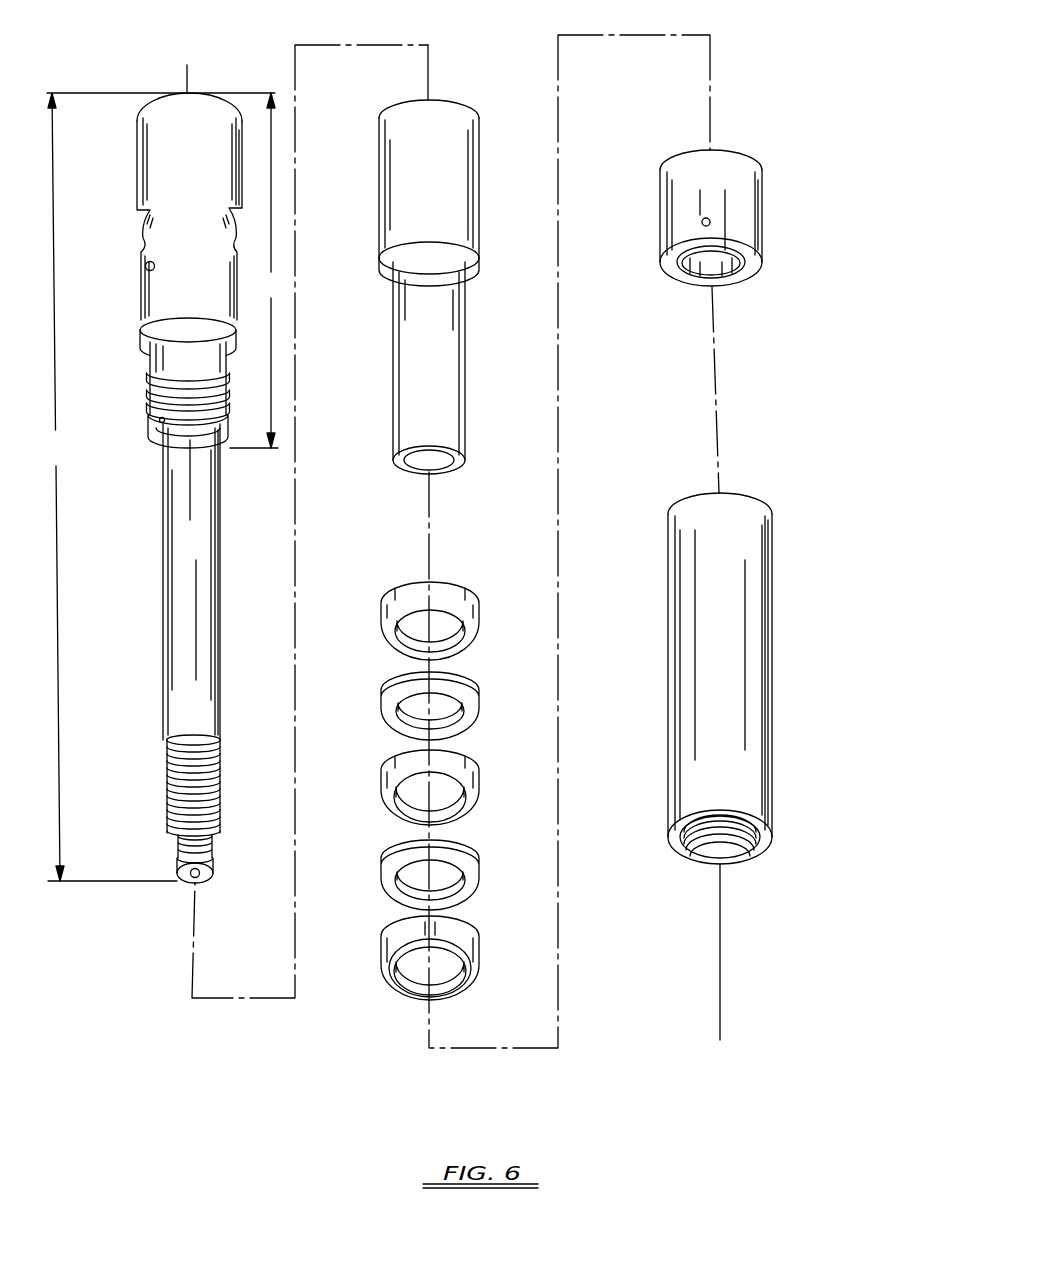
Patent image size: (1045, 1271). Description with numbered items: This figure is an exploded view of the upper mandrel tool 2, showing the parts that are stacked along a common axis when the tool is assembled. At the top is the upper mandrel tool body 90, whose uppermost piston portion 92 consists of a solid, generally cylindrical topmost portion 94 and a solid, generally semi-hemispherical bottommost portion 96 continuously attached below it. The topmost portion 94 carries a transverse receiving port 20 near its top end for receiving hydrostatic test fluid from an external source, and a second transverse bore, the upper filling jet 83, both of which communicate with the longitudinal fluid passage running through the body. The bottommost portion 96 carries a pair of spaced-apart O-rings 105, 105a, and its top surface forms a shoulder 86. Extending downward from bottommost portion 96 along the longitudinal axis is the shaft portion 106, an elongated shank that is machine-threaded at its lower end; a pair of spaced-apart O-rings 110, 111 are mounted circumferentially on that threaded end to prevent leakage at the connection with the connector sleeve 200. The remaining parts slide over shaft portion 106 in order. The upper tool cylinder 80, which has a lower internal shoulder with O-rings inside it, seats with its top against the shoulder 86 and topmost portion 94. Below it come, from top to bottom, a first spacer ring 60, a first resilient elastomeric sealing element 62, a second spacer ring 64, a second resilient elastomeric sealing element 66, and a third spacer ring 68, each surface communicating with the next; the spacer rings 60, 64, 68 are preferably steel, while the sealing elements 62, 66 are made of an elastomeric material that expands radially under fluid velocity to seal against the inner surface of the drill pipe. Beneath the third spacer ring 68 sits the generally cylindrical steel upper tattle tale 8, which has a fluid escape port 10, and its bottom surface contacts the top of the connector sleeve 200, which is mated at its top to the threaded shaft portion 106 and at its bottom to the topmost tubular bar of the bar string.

The upper mandrel tool 2 is at (558, 78).
The upper tattle tale 8 is at (742, 198).
The fluid escape port 10 is at (701, 224).
The receiving port 20 is at (145, 266).
The first spacer ring 60 is at (477, 618).
The first sealing element 62 is at (468, 723).
The second spacer ring 64 is at (465, 819).
The second sealing element 66 is at (470, 897).
The third spacer ring 68 is at (470, 989).
The upper tool cylinder 80 is at (448, 177).
The upper filling jet 83 is at (157, 426).
The shoulder 86 is at (141, 346).
The upper mandrel tool body 90 is at (160, 487).
The uppermost piston portion 92 is at (256, 270).
The topmost portion 94 is at (203, 122).
The bottommost portion 96 is at (193, 362).
The O-ring 105 is at (231, 387).
The O-ring 105a is at (232, 407).
The shaft portion 106 is at (202, 560).
The O-ring 110 is at (216, 843).
The O-ring 111 is at (217, 853).
The connector sleeve 200 is at (753, 655).